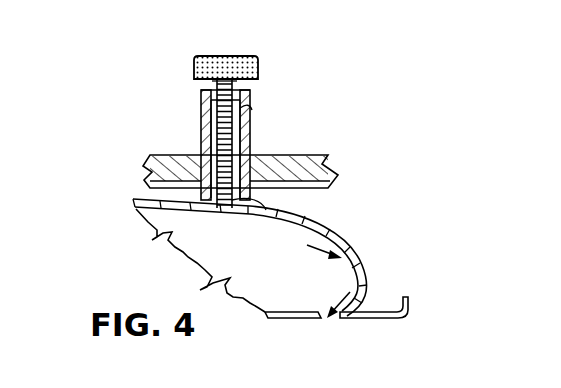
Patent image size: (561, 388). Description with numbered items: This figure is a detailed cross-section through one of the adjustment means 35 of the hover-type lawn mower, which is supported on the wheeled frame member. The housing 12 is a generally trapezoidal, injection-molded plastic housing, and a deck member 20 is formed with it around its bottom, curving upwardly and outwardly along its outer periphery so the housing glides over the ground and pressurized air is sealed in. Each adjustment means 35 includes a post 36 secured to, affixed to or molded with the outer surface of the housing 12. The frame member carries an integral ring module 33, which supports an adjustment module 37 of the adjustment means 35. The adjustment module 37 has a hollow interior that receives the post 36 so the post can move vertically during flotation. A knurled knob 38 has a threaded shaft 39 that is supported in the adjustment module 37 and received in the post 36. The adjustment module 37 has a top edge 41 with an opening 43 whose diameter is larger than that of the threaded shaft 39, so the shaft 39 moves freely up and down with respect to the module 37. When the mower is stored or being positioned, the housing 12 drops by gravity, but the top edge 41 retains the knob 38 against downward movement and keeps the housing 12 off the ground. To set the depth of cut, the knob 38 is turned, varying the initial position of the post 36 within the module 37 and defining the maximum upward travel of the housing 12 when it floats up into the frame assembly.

The housing 12 is at (373, 277).
The deck member 20 is at (388, 311).
The ring module 33 is at (302, 154).
The adjustment means 35 is at (116, 130).
The post 36 is at (268, 202).
The adjustment module 37 is at (201, 135).
The knurled knob 38 is at (218, 56).
The threaded shaft 39 is at (240, 86).
The top edge 41 is at (203, 95).
The opening 43 is at (246, 110).